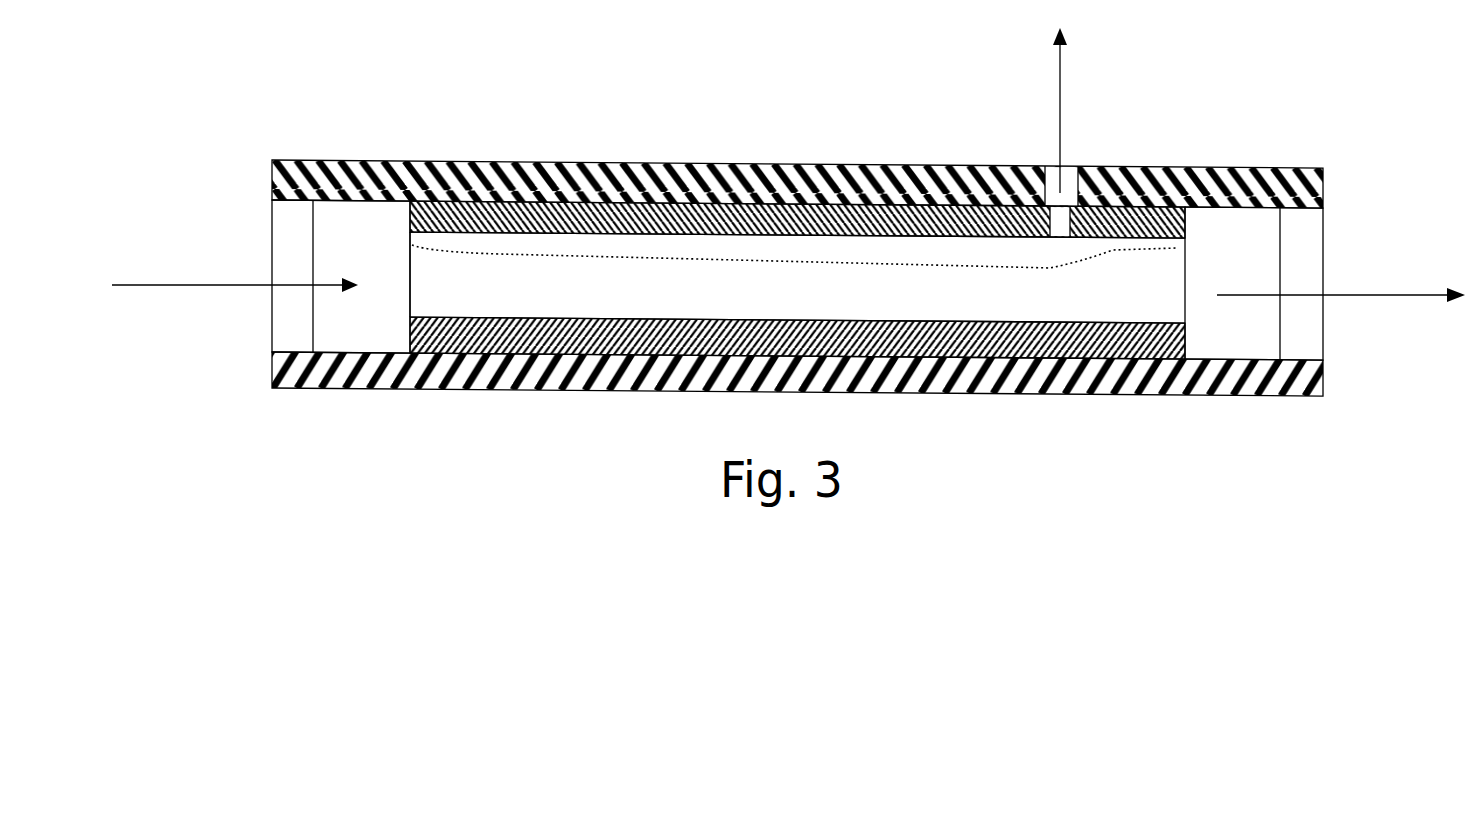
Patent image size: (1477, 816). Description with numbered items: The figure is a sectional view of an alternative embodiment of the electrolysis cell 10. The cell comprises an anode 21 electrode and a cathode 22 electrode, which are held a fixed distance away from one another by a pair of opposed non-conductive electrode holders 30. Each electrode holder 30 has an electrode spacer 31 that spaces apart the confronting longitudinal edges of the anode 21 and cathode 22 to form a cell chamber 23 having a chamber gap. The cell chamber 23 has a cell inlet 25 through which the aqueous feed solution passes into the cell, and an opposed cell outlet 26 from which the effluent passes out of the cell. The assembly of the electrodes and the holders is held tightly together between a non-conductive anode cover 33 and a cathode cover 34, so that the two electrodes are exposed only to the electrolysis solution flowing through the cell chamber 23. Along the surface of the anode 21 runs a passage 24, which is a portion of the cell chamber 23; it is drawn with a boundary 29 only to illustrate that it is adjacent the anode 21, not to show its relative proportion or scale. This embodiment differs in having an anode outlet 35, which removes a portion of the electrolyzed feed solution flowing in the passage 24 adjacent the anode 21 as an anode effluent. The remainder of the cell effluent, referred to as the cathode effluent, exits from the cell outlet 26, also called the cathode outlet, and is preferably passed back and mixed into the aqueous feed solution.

The electrolysis cell 10 is at (457, 133).
The anode 21 is at (615, 215).
The cathode 22 is at (540, 340).
The cell chamber 23 is at (668, 290).
The passage 24 is at (803, 252).
The cell inlet 25 is at (388, 273).
The cell outlet 26 is at (1217, 280).
The boundary 29 is at (873, 265).
The electrode holder 30 is at (353, 310).
The electrode spacer 31 is at (470, 286).
The anode cover 33 is at (573, 165).
The cathode cover 34 is at (477, 368).
The anode outlet 35 is at (1057, 192).